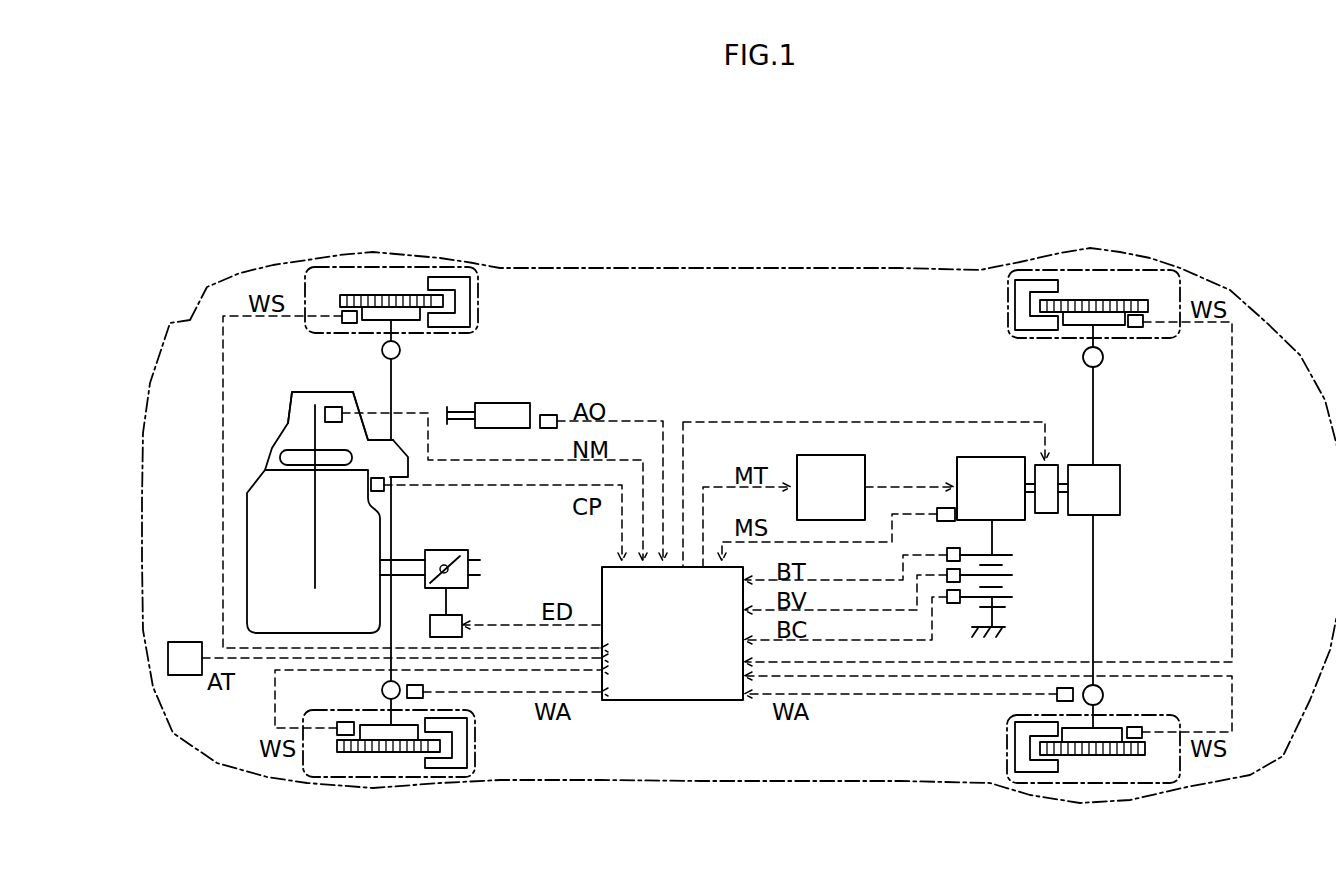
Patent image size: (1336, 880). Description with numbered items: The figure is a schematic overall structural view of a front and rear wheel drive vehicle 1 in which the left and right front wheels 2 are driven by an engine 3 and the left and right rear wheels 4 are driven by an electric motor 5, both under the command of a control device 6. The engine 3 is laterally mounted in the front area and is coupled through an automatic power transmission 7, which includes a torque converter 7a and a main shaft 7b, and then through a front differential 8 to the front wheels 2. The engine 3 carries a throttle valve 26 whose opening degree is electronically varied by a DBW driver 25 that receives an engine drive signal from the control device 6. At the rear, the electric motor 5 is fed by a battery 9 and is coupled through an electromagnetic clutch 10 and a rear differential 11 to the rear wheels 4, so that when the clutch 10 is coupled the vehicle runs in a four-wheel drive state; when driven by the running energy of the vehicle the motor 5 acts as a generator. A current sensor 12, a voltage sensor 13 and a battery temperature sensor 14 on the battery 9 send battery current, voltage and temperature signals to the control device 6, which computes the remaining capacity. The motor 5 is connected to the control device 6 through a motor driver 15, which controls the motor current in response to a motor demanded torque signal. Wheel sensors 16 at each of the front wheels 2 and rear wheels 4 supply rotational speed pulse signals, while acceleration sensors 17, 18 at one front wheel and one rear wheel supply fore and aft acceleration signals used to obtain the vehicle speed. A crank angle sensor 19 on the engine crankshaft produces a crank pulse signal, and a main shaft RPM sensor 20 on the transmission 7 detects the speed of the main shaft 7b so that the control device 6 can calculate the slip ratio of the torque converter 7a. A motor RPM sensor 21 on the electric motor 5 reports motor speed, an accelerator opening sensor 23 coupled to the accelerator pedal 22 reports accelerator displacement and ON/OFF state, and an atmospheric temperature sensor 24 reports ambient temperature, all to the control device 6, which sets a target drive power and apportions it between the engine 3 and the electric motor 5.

The front and rear wheel drive vehicle 1 is at (731, 235).
The front wheels 2 is at (392, 268).
The engine 3 is at (272, 553).
The rear wheels 4 is at (1093, 270).
The electric motor 5 is at (990, 455).
The control device 6 is at (672, 701).
The automatic power transmission 7 is at (288, 407).
The torque converter 7a is at (282, 457).
The main shaft 7b is at (292, 433).
The front differential 8 is at (398, 455).
The battery 9 is at (1012, 588).
The electromagnetic clutch 10 is at (1052, 472).
The rear differential 11 is at (1113, 492).
The current sensor 12 is at (953, 604).
The voltage sensor 13 is at (947, 577).
The battery temperature sensor 14 is at (947, 556).
The motor driver 15 is at (832, 455).
The wheel sensors 16 is at (344, 315).
The acceleration sensor 17 is at (425, 694).
The acceleration sensor 18 is at (1057, 696).
The crank angle sensor 19 is at (373, 483).
The main shaft RPM sensor 20 is at (332, 407).
The motor RPM sensor 21 is at (940, 512).
The accelerator pedal 22 is at (507, 408).
The accelerator opening sensor 23 is at (547, 415).
The atmospheric temperature sensor 24 is at (185, 663).
The DBW driver 25 is at (455, 627).
The throttle valve 26 is at (446, 565).